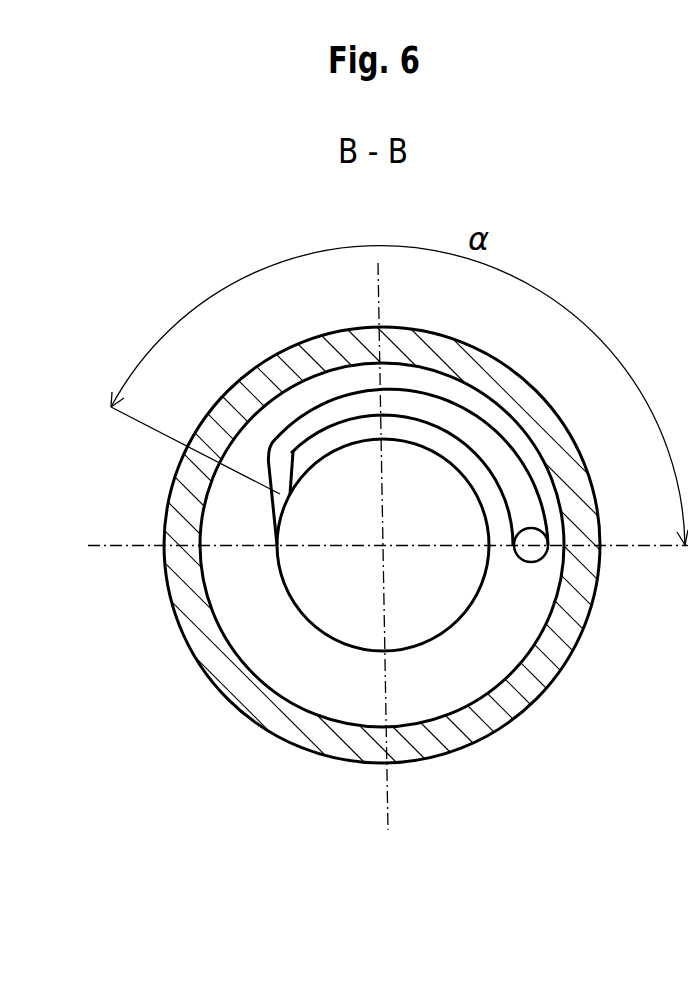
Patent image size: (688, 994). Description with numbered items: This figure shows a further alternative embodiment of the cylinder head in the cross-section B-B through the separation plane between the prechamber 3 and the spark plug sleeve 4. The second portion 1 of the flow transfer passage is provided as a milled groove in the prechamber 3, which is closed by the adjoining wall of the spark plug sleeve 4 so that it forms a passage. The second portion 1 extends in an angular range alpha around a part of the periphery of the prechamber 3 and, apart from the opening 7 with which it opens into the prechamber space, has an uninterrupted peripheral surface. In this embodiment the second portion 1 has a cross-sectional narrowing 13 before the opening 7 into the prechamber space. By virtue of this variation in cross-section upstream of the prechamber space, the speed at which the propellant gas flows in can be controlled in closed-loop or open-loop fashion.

The second portion of the flow transfer passage 1 is at (475, 443).
The prechamber 3 is at (433, 693).
The spark plug sleeve 4 is at (550, 673).
The opening 7 is at (302, 522).
The cross-sectional narrowing 13 is at (282, 469).